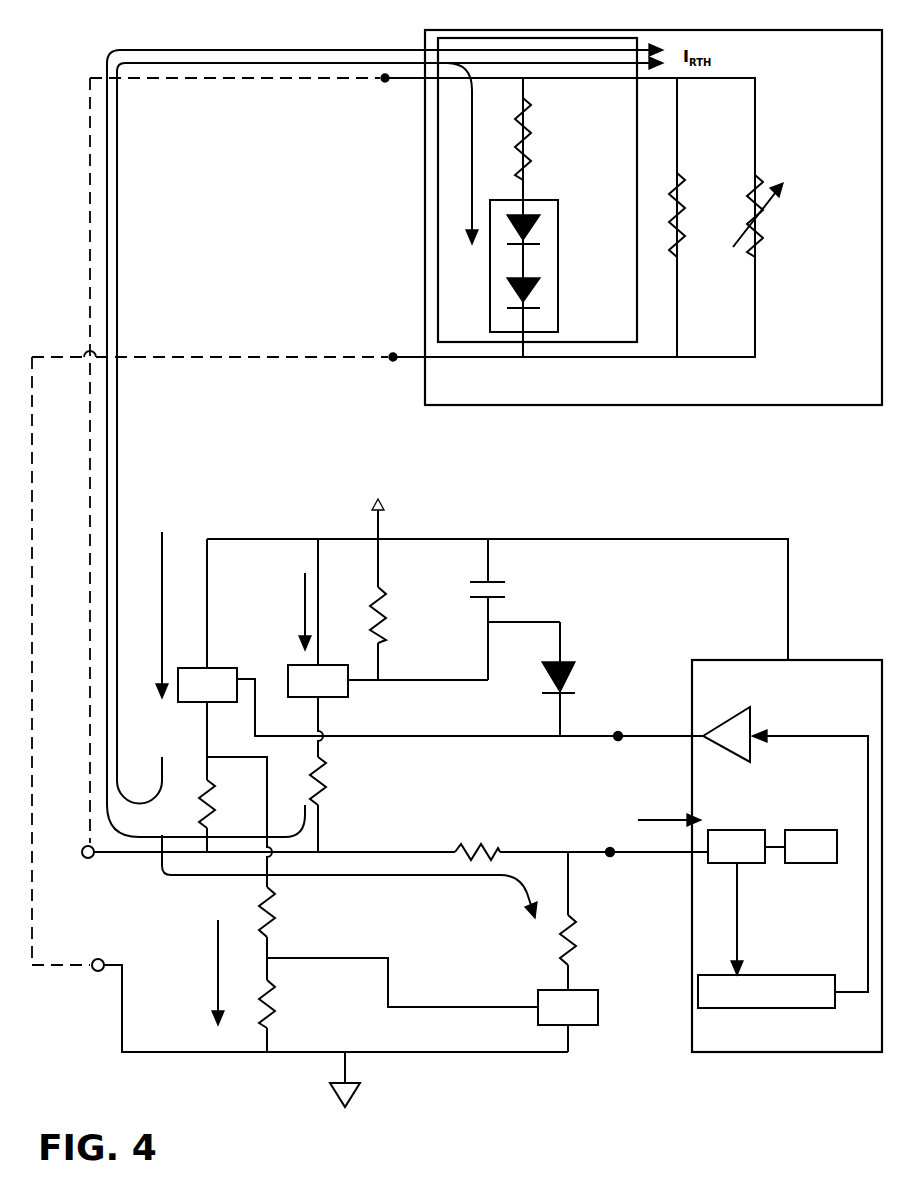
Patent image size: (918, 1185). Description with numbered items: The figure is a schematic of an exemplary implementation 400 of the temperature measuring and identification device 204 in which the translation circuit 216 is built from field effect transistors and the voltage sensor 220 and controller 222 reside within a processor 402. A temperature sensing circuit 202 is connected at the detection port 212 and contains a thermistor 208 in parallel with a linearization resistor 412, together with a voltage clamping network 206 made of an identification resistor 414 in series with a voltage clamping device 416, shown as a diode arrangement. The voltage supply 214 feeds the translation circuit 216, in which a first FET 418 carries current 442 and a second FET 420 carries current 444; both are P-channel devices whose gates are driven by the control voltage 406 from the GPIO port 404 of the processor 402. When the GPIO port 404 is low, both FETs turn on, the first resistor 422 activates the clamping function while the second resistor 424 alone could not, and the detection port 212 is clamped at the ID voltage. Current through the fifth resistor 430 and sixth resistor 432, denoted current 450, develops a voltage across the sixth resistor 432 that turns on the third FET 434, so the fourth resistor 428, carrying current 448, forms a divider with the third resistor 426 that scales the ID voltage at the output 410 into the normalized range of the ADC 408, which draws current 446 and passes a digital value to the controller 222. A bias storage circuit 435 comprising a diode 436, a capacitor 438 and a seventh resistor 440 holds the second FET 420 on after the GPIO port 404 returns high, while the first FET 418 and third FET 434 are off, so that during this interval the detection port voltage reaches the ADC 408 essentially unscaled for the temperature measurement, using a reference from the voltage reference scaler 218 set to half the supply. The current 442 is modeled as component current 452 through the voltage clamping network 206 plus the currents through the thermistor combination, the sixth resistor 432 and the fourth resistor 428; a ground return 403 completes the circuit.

The temperature sensing circuit (TSC) 202 is at (720, 30).
The voltage clamping network (VCN) 206 is at (610, 38).
The component current I_ID 452 is at (472, 138).
The identification resistor (R_ID) 414 is at (540, 135).
The voltage clamping device 416 is at (558, 300).
The linearization resistor (R_LIN) 412 is at (677, 172).
The thermistor (TSE) 208 is at (765, 240).
The bias storage circuit 435 is at (578, 577).
The exemplary implementation 400 is at (497, 553).
The voltage supply 214 is at (382, 508).
The translation circuit 216 is at (533, 496).
The current I1 442 is at (163, 557).
The current I2 444 is at (305, 603).
The first field effect transistor (FET1) 418 is at (210, 667).
The second field effect transistor (FET2) 420 is at (348, 695).
The seventh resistor (R7) 440 is at (383, 595).
The capacitor 438 is at (493, 580).
The diode 436 is at (567, 673).
The control voltage (V_CONT) 406 is at (620, 742).
The processor 402 is at (810, 660).
The general purpose input/output (GPIO) port 404 is at (752, 720).
The current I_ADC 446 is at (660, 817).
The analog-to-digital converter (ADC) 408 is at (723, 828).
The voltage reference scaler 218 is at (798, 865).
The voltage sensor 220 is at (723, 889).
The controller 222 is at (718, 1010).
The third resistor (R3) 426 is at (453, 845).
The output of translation circuit 410 is at (613, 857).
The first resistor (R1) 422 is at (210, 783).
The second resistor (R2) 424 is at (322, 783).
The fifth resistor (R5) 430 is at (272, 895).
The sixth resistor (R6) 432 is at (273, 1003).
The current I_R5+R6 450 is at (218, 957).
The current I_R3+R4 448 is at (515, 880).
The fourth resistor (R4) 428 is at (580, 926).
The third field effect transistor (FET3) 434 is at (552, 993).
The detection port 212 is at (88, 860).
The ground node 403 is at (133, 1054).
The temperature measuring and identification device (TMID device) 204 is at (565, 1080).